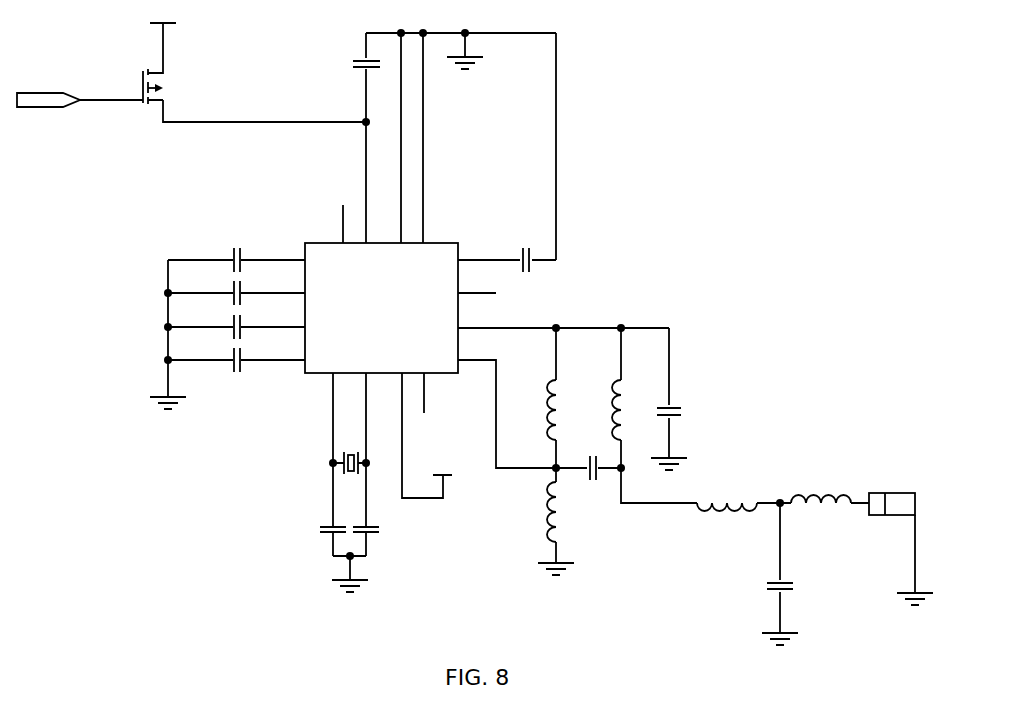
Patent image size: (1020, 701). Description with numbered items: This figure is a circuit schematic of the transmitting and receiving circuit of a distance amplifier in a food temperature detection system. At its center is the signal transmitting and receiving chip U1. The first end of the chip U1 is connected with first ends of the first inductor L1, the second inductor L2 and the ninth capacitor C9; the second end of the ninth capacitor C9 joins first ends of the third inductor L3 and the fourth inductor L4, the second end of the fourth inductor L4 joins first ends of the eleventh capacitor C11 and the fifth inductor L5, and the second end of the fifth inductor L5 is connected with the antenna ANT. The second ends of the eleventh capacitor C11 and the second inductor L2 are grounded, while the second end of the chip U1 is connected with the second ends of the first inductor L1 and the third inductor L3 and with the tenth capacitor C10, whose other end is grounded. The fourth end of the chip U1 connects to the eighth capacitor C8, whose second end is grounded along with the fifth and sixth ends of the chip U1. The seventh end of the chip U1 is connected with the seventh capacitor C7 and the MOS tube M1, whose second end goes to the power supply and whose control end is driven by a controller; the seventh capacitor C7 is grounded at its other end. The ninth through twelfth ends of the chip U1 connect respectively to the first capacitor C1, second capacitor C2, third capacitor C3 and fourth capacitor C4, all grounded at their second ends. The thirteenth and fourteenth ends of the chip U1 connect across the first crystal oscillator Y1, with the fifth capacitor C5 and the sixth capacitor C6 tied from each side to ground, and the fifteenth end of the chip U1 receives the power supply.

The MOS tube M1 is at (141, 86).
The signal transmitting and receiving chip U1 is at (377, 314).
The first crystal oscillator Y1 is at (351, 456).
The first capacitor C1 is at (223, 255).
The second capacitor C2 is at (223, 289).
The third capacitor C3 is at (223, 326).
The fourth capacitor C4 is at (223, 359).
The fifth capacitor C5 is at (323, 530).
The sixth capacitor C6 is at (376, 530).
The seventh capacitor C7 is at (357, 65).
The eighth capacitor C8 is at (525, 252).
The ninth capacitor C9 is at (590, 461).
The tenth capacitor C10 is at (686, 412).
The eleventh capacitor C11 is at (797, 591).
The first inductor L1 is at (536, 410).
The second inductor L2 is at (540, 512).
The third inductor L3 is at (606, 410).
The fourth inductor L4 is at (727, 523).
The fifth inductor L5 is at (821, 491).
The antenna ANT is at (892, 496).